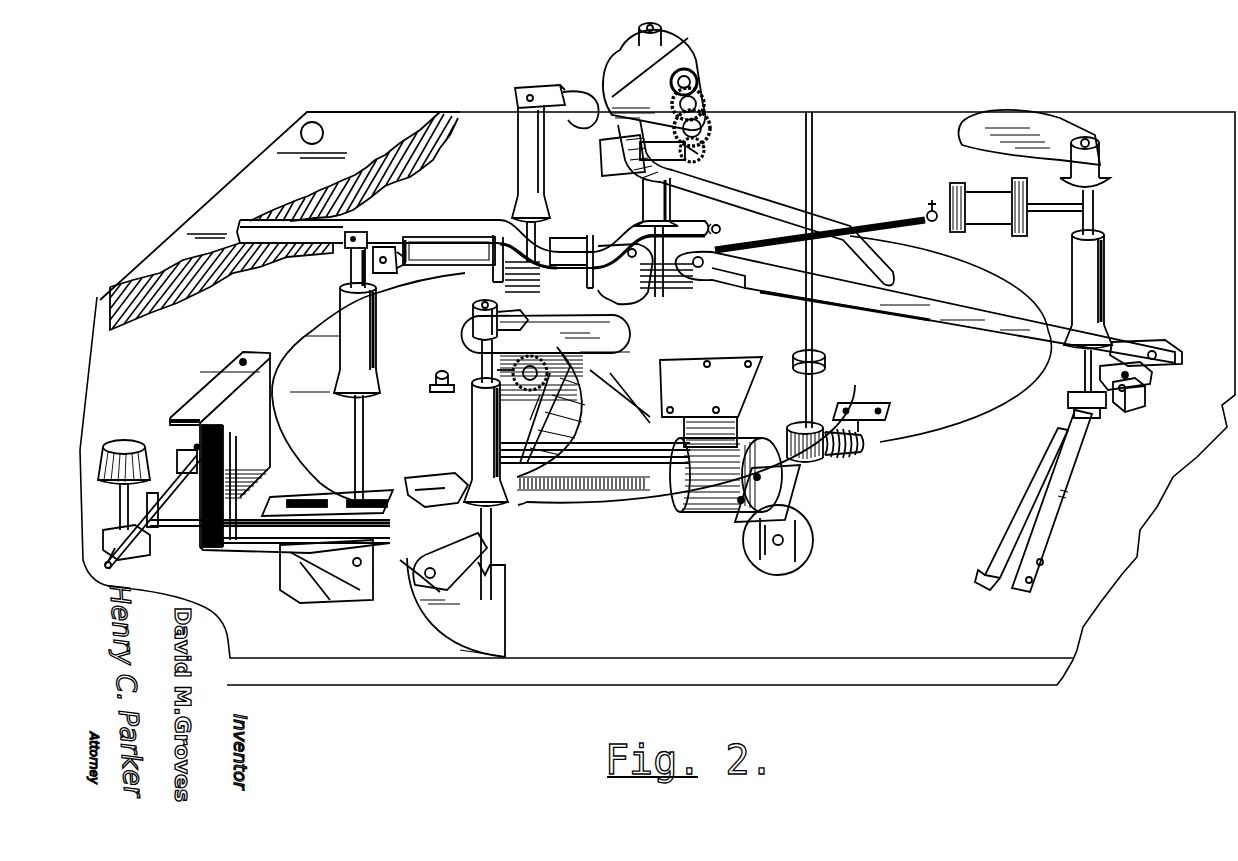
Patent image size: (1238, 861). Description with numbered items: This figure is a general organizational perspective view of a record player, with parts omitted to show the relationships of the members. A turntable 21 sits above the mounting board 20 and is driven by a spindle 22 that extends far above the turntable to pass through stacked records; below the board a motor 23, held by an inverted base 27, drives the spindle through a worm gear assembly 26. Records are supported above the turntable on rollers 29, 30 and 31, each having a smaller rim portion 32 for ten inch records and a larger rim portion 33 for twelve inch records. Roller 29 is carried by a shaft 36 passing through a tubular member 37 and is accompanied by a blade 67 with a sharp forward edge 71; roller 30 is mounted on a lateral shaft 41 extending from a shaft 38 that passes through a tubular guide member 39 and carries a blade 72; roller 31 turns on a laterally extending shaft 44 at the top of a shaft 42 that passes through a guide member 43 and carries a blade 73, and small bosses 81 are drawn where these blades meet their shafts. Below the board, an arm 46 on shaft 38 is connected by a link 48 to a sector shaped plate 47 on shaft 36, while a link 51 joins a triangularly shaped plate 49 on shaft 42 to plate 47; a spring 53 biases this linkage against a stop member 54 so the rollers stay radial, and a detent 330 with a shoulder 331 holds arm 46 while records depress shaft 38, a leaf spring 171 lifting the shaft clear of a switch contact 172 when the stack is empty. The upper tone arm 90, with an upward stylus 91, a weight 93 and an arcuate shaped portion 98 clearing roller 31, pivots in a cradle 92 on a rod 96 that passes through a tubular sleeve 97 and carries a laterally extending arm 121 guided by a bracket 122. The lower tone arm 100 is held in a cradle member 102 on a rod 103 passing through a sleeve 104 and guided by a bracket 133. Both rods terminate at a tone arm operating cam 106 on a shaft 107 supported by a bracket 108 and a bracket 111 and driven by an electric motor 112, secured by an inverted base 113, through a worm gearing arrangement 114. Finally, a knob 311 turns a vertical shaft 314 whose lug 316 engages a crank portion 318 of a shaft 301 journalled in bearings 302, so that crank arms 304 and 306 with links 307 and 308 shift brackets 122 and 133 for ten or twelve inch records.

The mounting board 20 is at (205, 225).
The turntable 21 is at (966, 418).
The vertical shaft or spindle 22 is at (813, 198).
The motor 23 is at (800, 568).
The worm gear assembly 26 is at (852, 456).
The inverted base 27 is at (748, 512).
The roller 29 is at (704, 128).
The roller 30 is at (983, 196).
The roller 31 is at (556, 398).
The smaller rim portion 32 is at (705, 150).
The larger diameter rim portion 33 is at (698, 80).
The shaft 36 is at (655, 303).
The tubular member 37 is at (652, 188).
The shaft 38 is at (1068, 398).
The tubular guide member 39 is at (1104, 262).
The shaft 41 is at (1068, 212).
The shaft 42 is at (492, 548).
The guide member 43 is at (472, 424).
The laterally extending shaft 44 is at (532, 392).
The arm 46 is at (1175, 358).
The sector shaped plate 47 is at (705, 280).
The link 48 is at (936, 312).
The triangularly shaped plate 49 is at (500, 610).
The link 51 is at (530, 430).
The spring 53 is at (895, 226).
The stop member 54 is at (405, 578).
The blade 67 is at (612, 80).
The sharp forward edge 71 is at (705, 99).
The blade 72 is at (1025, 128).
The blade 73 is at (612, 350).
The boss 81 is at (665, 40).
The upper tone arm 90 is at (478, 232).
The stylus 91 is at (713, 222).
The cradle 92 is at (368, 234).
The weight 93 is at (255, 219).
The rod 96 is at (350, 262).
The tubular sleeve 97 is at (378, 372).
The arcuate shaped portion 98 is at (548, 252).
The lower tone arm 100 is at (756, 203).
The cradle member 102 is at (515, 98).
The rod 103 is at (497, 302).
The sleeve 104 is at (518, 140).
The tone arm operating cam 106 is at (326, 348).
The shaft 107 is at (450, 360).
The bracket 108 is at (262, 452).
The bracket 111 is at (620, 486).
The electric motor 112 is at (700, 506).
The inverted base 113 is at (730, 340).
The worm gearing arrangement 114 is at (420, 494).
The laterally extending arm 121 is at (346, 497).
The bracket 122 is at (282, 568).
The bracket 133 is at (549, 263).
The leaf spring 171 is at (1055, 516).
The switch contact 172 is at (1034, 510).
The shaft 301 is at (168, 478).
The bearings 302 is at (392, 273).
The crank arm 304 is at (186, 514).
The crank arm 306 is at (403, 250).
The link 307 is at (160, 522).
The link 308 is at (470, 272).
The knob 311 is at (118, 446).
The vertical shaft 314 is at (120, 500).
The lug 316 is at (128, 548).
The crank portion 318 is at (115, 566).
The detent 330 is at (1150, 404).
The shoulder 331 is at (1155, 378).